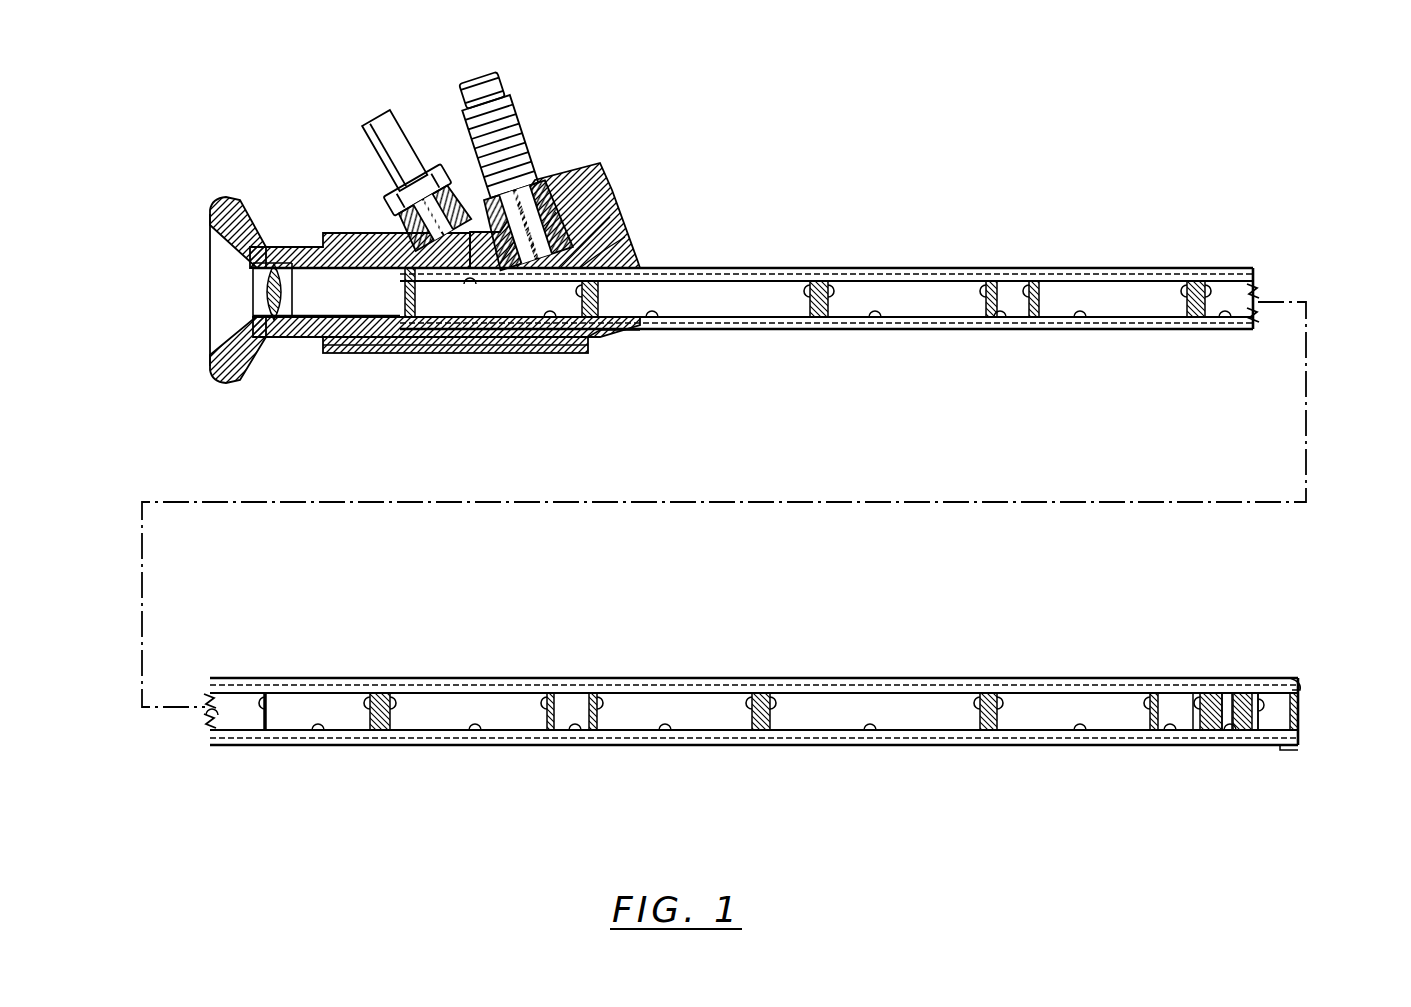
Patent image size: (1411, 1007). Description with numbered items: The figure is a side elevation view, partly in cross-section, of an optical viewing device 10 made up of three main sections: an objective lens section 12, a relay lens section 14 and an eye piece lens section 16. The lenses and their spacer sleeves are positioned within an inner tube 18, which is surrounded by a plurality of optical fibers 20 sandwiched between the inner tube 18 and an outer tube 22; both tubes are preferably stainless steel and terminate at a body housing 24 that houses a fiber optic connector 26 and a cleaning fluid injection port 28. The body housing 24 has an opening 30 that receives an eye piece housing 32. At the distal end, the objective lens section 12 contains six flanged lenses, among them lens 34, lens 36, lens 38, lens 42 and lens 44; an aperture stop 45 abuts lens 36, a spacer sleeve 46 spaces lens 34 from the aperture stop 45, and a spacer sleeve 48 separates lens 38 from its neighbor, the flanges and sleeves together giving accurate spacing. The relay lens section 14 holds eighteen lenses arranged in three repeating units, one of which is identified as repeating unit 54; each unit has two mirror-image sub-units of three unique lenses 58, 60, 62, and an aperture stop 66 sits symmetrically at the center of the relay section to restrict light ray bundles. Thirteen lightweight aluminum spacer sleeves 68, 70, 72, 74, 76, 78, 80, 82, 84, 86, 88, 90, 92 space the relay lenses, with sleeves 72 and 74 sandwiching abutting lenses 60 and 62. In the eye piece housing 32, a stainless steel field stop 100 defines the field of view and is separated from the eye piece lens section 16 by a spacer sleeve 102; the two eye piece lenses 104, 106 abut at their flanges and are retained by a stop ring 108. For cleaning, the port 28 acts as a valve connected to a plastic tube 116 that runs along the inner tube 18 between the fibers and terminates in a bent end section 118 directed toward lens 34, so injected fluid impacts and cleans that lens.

The optical viewing device 10 is at (881, 155).
The objective lens section 12 is at (1193, 755).
The relay lens section 14 is at (420, 440).
The eye piece lens section 16 is at (210, 390).
The inner tube 18 is at (1118, 267).
The optical fibers 20 is at (918, 267).
The outer tube 22 is at (703, 266).
The body housing 24 is at (558, 178).
The fiber optic connector 26 is at (515, 138).
The cleaning fluid injection port 28 is at (365, 146).
The opening 30 is at (332, 350).
The eye piece housing 32 is at (225, 200).
The lens 34 is at (1300, 722).
The lens 36 is at (1250, 694).
The lens 38 is at (1235, 694).
The lens 42 is at (1215, 694).
The lens 44 is at (1205, 694).
The aperture stop 45 is at (1272, 694).
The spacer sleeve 46 is at (1290, 750).
The spacer sleeve 48 is at (1230, 736).
The repeating unit 54 is at (1175, 665).
The lens 58 is at (415, 300).
The lens 60 is at (596, 318).
The lens 62 is at (605, 290).
The aperture stop 66 is at (265, 692).
The spacer sleeve 68 is at (1170, 736).
The spacer sleeve 70 is at (1080, 736).
The spacer sleeve 72 is at (870, 736).
The spacer sleeve 74 is at (665, 736).
The spacer sleeve 76 is at (575, 736).
The spacer sleeve 78 is at (475, 736).
The spacer sleeve 80 is at (318, 736).
The spacer sleeve 82 is at (1225, 320).
The spacer sleeve 84 is at (1080, 320).
The spacer sleeve 86 is at (1000, 320).
The spacer sleeve 88 is at (875, 320).
The spacer sleeve 90 is at (652, 320).
The spacer sleeve 92 is at (550, 320).
The field stop 100 is at (370, 345).
The spacer sleeve 102 is at (325, 356).
The lens 104 is at (283, 252).
The lens 106 is at (270, 262).
The stop ring 108 is at (250, 292).
The plastic tube 116 is at (470, 290).
The end section 118 is at (1300, 690).